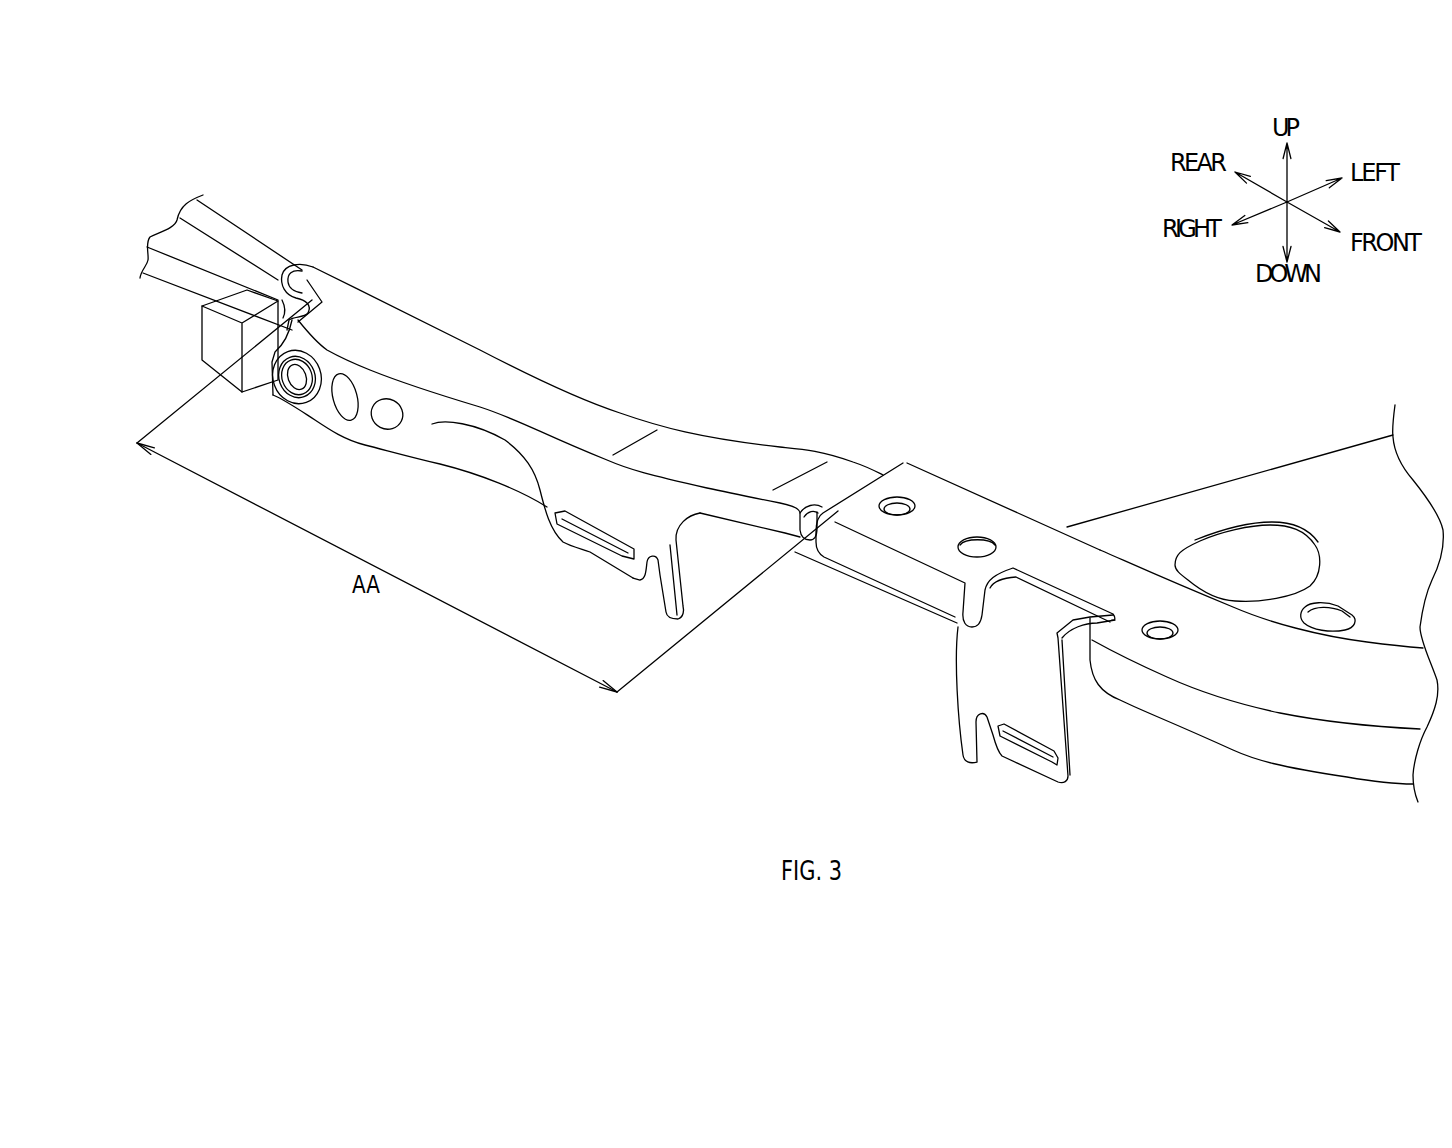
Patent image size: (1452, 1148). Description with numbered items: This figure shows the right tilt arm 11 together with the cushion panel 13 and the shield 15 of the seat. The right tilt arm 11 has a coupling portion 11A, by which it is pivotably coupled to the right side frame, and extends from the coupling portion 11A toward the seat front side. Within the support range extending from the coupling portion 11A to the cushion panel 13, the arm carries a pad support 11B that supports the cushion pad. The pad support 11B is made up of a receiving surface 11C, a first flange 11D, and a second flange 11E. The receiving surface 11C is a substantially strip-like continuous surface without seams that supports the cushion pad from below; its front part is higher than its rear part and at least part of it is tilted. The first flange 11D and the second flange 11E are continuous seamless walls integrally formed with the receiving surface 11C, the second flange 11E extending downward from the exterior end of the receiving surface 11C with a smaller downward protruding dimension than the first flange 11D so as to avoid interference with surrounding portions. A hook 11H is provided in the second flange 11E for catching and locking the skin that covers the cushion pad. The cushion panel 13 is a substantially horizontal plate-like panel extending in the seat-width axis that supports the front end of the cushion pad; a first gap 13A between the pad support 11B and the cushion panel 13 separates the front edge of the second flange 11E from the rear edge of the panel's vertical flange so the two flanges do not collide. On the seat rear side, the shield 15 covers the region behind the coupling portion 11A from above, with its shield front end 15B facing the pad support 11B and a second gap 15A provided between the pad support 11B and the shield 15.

The right tilt arm 11 is at (567, 387).
The coupling portion 11A is at (297, 407).
The pad support 11B is at (550, 467).
The receiving surface 11C is at (447, 357).
The first flange 11D is at (450, 457).
The second flange 11E is at (443, 400).
The hook 11H is at (581, 537).
The cushion panel 13 is at (1243, 476).
The first gap 13A is at (822, 505).
The shield 15 is at (248, 232).
The second gap 15A is at (247, 292).
The shield front end 15B is at (310, 270).